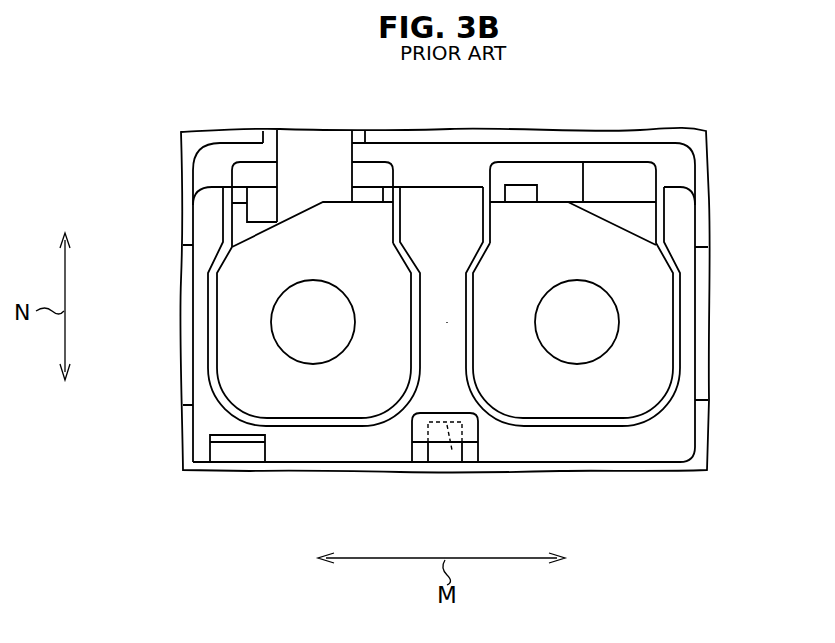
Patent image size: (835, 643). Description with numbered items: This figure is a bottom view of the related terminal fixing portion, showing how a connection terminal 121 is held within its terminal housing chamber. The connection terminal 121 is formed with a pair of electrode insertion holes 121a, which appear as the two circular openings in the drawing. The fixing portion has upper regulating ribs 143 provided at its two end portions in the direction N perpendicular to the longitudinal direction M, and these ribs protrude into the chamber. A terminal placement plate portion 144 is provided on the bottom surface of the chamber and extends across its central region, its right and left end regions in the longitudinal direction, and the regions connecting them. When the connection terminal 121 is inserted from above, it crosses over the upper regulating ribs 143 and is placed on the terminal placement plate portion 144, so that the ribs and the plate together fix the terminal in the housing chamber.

The connection terminal 121 is at (598, 390).
The electrode insertion holes 121a is at (303, 363).
The upper regulating ribs 143 is at (262, 203).
The terminal placement plate portion 144 is at (447, 322).